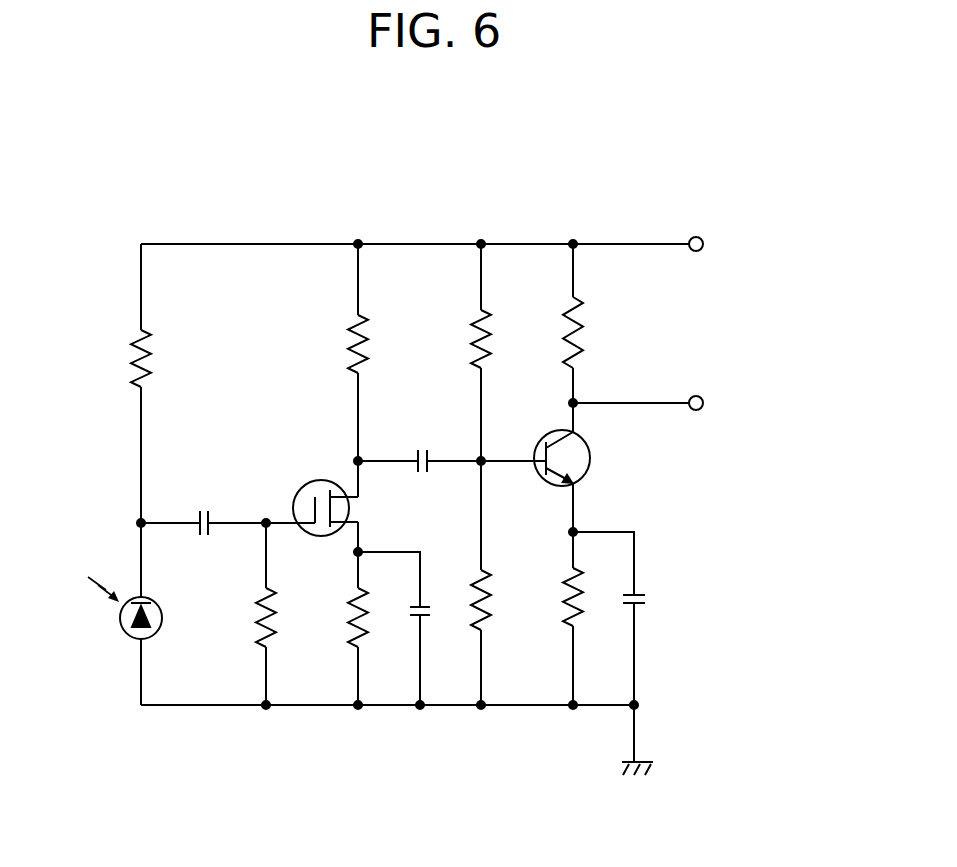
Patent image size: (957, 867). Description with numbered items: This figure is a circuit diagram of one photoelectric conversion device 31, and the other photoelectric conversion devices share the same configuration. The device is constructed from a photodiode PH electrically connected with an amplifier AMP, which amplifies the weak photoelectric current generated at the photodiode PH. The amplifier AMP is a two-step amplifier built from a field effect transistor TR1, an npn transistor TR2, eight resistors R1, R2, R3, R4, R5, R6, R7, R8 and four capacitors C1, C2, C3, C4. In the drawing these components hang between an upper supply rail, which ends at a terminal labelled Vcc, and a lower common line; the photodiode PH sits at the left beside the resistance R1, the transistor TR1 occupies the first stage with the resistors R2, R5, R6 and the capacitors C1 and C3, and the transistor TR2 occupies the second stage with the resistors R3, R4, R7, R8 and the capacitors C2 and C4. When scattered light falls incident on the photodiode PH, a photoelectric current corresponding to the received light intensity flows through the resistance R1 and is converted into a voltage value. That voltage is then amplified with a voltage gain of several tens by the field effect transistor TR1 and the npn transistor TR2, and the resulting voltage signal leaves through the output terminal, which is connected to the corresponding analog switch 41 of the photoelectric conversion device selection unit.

The photoelectric conversion device 31 is at (350, 719).
The analog switch 41 is at (697, 411).
The amplifier AMP is at (451, 235).
The photodiode PH is at (121, 628).
The supply voltage terminal Vcc is at (727, 243).
The resistance R1 is at (163, 358).
The resistor R2 is at (379, 474).
The resistor R3 is at (503, 407).
The resistor R4 is at (599, 325).
The resistor R5 is at (287, 614).
The resistor R6 is at (378, 617).
The resistor R7 is at (504, 637).
The resistor R8 is at (593, 636).
The capacitor C1 is at (226, 503).
The capacitor C2 is at (452, 439).
The capacitor C3 is at (412, 628).
The capacitor C4 is at (631, 618).
The field effect transistor TR1 is at (325, 489).
The npn transistor TR2 is at (596, 485).